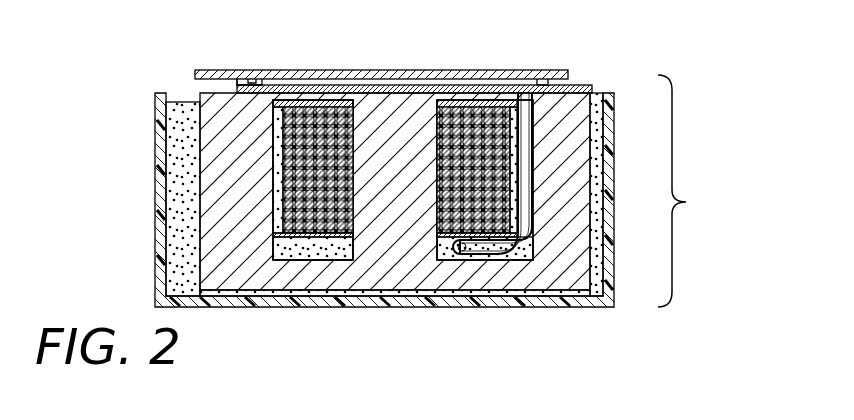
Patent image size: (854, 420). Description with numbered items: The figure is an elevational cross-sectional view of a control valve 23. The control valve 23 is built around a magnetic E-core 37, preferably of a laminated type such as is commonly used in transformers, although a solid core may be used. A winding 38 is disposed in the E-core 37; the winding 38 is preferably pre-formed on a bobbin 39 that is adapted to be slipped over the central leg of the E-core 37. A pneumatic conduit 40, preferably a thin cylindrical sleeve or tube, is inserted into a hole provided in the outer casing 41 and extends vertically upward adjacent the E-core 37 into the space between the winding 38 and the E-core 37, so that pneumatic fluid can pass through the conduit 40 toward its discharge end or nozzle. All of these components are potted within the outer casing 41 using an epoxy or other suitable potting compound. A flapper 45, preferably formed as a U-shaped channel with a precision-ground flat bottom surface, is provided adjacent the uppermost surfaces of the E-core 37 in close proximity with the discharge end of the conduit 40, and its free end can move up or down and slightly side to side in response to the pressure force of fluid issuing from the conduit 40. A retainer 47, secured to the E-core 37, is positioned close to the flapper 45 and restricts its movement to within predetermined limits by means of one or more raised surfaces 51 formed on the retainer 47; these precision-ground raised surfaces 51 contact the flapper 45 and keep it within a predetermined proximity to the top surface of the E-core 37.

The control valve 23 is at (694, 191).
The magnetic E-core 37 is at (586, 92).
The winding 38 is at (483, 102).
The bobbin 39 is at (305, 100).
The pneumatic conduit 40 is at (513, 257).
The outer casing 41 is at (157, 228).
The flapper 45 is at (569, 80).
The retainer 47 is at (418, 70).
The raised surfaces 51 is at (246, 92).